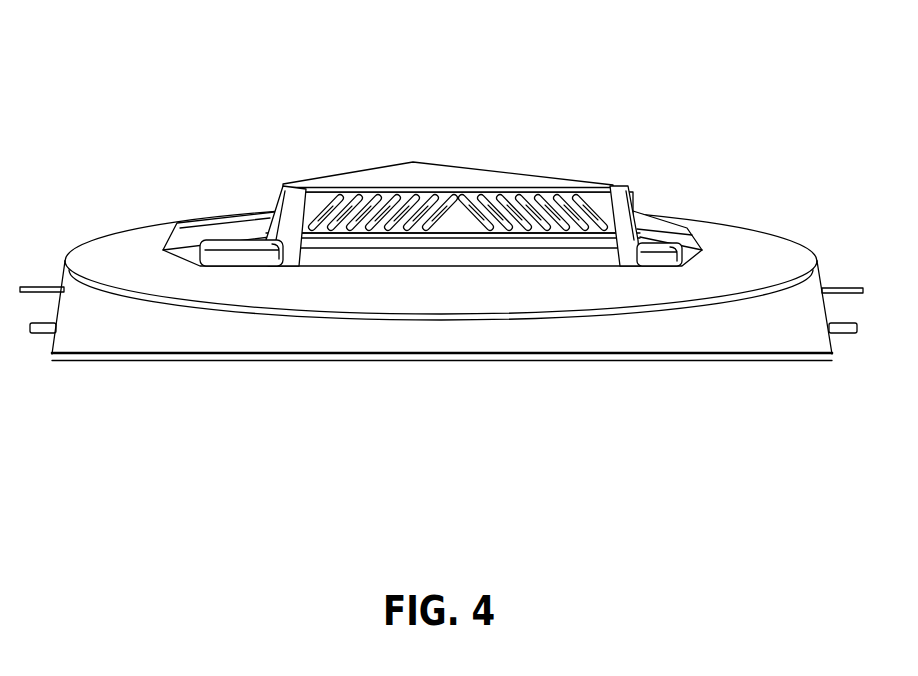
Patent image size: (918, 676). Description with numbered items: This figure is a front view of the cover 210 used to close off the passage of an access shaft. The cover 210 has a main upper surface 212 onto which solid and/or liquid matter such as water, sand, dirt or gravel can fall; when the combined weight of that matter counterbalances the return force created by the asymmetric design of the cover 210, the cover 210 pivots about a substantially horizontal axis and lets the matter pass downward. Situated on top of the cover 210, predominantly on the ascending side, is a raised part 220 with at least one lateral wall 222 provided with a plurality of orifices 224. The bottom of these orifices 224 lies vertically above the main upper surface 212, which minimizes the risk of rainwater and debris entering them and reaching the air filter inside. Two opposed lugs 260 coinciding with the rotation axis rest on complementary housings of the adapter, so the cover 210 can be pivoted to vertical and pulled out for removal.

The cover 210 is at (186, 106).
The main upper surface 212 is at (443, 303).
The raised part 220 is at (498, 175).
The lateral wall 222 is at (632, 198).
The orifices 224 is at (357, 198).
The lugs 260 is at (42, 334).